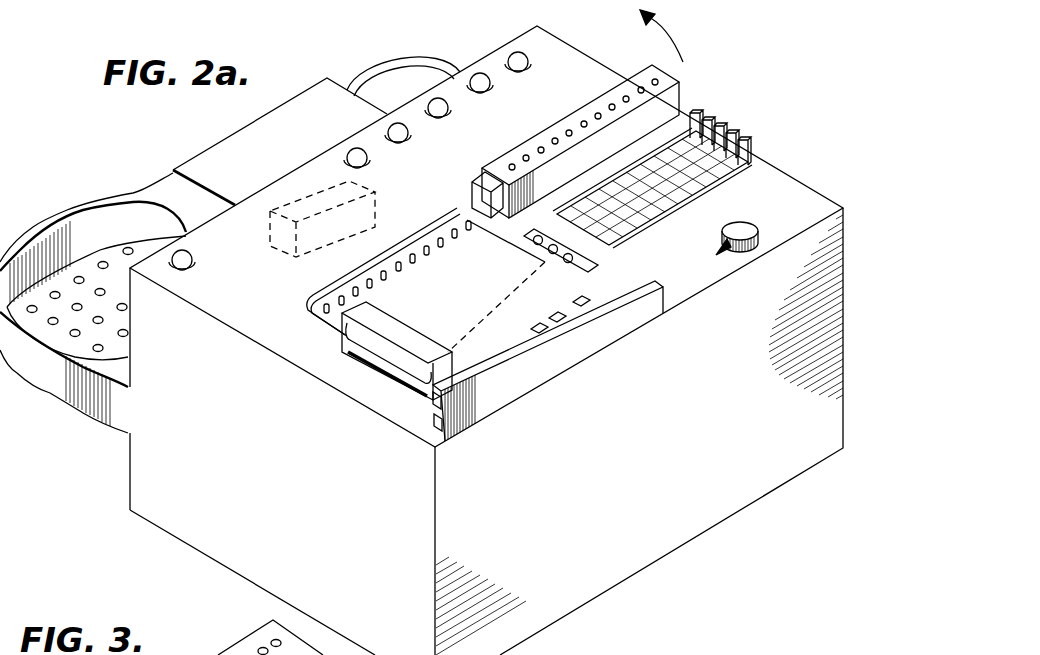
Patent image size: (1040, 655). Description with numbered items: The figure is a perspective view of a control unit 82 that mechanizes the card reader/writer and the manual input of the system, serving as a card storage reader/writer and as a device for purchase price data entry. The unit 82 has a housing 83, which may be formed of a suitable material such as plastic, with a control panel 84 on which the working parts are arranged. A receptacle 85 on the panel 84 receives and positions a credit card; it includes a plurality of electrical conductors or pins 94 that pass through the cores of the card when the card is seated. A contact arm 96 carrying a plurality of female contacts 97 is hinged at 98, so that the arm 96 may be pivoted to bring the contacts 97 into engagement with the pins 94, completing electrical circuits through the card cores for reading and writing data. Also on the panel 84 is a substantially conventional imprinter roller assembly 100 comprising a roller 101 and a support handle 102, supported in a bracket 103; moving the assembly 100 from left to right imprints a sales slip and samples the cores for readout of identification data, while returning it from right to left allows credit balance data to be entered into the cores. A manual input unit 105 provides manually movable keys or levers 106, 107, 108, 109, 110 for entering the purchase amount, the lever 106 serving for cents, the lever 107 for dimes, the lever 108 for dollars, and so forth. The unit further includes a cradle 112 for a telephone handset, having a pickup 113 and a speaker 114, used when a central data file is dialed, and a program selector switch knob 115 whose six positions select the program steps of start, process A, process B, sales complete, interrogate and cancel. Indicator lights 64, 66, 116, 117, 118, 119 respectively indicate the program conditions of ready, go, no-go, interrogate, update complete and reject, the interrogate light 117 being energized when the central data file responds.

The indicator light 64 is at (450, 108).
The indicator light 66 is at (476, 74).
The unit 82 is at (486, 340).
The housing 83 is at (197, 525).
The control panel 84 is at (237, 308).
The receptacle 85 is at (452, 274).
The pins 94 is at (373, 272).
The contact arm 96 is at (637, 70).
The female contacts 97 is at (600, 110).
The hinge 98 is at (477, 188).
The imprinter roller assembly 100 is at (358, 340).
The roller 101 is at (393, 363).
The support handle 102 is at (393, 327).
The bracket 103 is at (480, 407).
The manual input unit 105 is at (635, 182).
The lever 106 is at (697, 111).
The lever 107 is at (710, 118).
The lever 108 is at (724, 125).
The lever 109 is at (737, 132).
The lever 110 is at (750, 142).
The cradle 112 is at (230, 163).
The pickup 113 is at (380, 75).
The speaker 114 is at (77, 268).
The program selector switch knob 115 is at (744, 256).
The indicator light 116 is at (514, 50).
The indicator light 117 is at (410, 132).
The indicator light 118 is at (368, 160).
The indicator light 119 is at (194, 260).